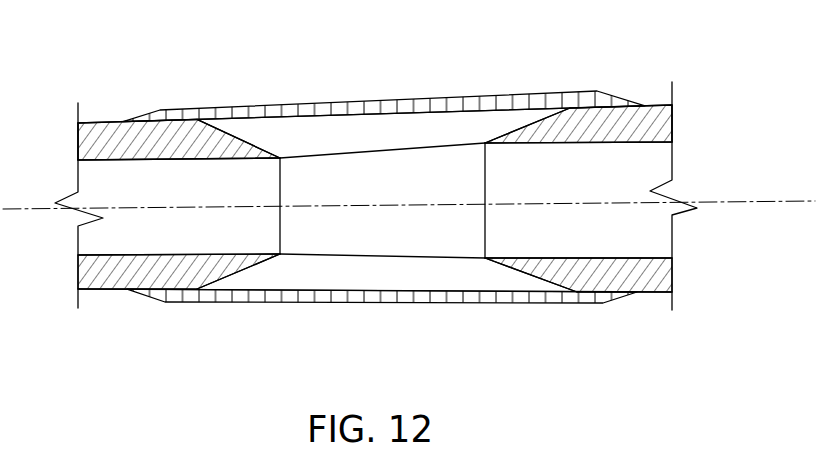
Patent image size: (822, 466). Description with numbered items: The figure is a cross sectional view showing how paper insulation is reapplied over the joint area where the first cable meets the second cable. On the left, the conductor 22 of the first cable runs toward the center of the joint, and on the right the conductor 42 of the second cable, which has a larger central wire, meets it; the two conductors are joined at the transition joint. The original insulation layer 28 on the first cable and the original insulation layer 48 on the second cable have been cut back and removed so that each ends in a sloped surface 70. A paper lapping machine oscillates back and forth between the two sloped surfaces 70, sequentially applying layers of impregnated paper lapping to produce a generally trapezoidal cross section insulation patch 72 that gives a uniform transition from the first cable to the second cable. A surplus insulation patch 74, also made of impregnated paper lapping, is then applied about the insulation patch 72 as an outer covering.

The conductor 22 is at (107, 241).
The conductor 42 is at (616, 237).
The insulation layer 28 is at (87, 122).
The insulation layer 48 is at (653, 103).
The sloped surface 70 is at (225, 122).
The insulation patch 72 is at (410, 126).
The surplus insulation patch 74 is at (317, 103).